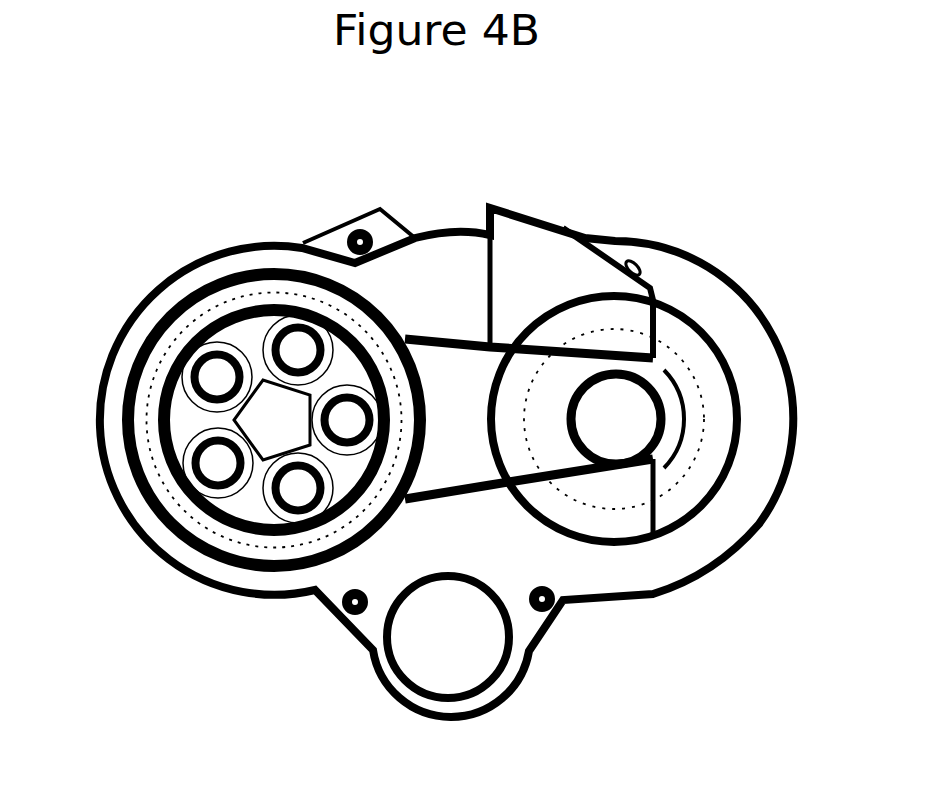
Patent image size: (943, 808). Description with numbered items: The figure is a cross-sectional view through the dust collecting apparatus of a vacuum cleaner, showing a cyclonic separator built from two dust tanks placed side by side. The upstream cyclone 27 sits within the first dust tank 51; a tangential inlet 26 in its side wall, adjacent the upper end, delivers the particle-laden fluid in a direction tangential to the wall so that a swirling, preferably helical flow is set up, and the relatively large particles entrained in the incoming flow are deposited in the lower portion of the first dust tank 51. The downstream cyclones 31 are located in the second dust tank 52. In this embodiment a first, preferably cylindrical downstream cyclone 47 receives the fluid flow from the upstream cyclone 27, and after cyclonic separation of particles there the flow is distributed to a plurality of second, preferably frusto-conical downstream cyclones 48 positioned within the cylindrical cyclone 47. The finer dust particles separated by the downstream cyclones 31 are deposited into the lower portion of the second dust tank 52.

The tangential inlet 26 is at (616, 240).
The upstream cyclone 27 is at (720, 423).
The downstream cyclones 31 is at (165, 383).
The first downstream cyclone 47 is at (248, 295).
The second downstream cyclones 48 is at (283, 517).
The first dust tank 51 is at (693, 298).
The second dust tank 52 is at (193, 280).